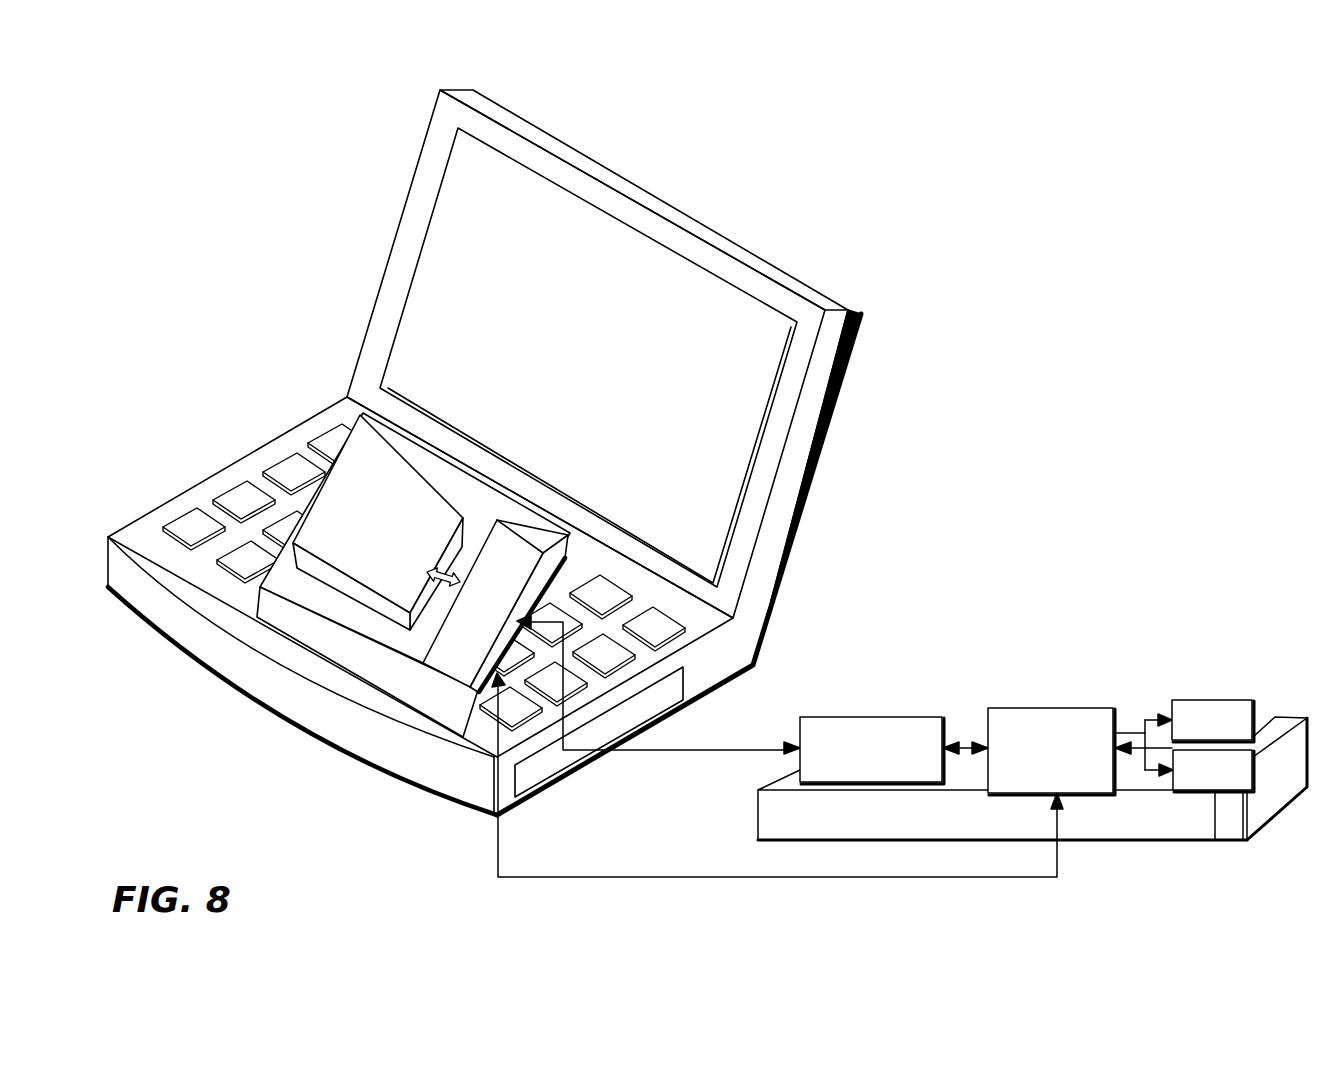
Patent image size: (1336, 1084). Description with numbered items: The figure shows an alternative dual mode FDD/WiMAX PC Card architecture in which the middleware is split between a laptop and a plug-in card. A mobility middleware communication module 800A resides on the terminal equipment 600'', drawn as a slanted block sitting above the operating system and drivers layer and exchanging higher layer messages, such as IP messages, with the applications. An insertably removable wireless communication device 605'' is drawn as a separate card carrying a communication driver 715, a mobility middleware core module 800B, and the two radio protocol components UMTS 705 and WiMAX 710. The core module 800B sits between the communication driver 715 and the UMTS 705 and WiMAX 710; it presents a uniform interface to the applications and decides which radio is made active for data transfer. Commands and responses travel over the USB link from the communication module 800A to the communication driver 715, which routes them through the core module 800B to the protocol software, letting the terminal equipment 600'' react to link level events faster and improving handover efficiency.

The terminal equipment 600'' is at (540, 452).
The mobility middleware communication module 800A is at (460, 680).
The communication driver 715 is at (895, 717).
The mobility middleware core module 800B is at (1043, 708).
The UMTS 705 is at (1210, 700).
The WiMAX 710 is at (1257, 775).
The insertably removable wireless communication device 605'' is at (1044, 728).